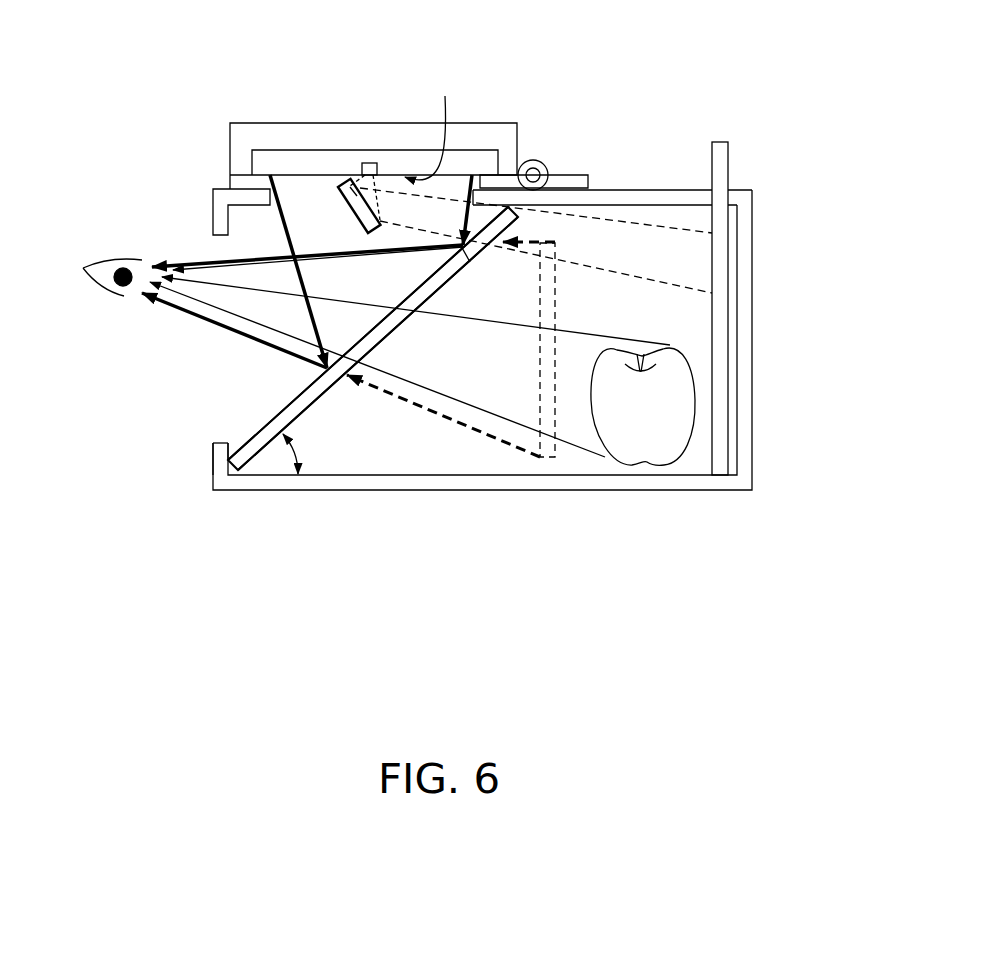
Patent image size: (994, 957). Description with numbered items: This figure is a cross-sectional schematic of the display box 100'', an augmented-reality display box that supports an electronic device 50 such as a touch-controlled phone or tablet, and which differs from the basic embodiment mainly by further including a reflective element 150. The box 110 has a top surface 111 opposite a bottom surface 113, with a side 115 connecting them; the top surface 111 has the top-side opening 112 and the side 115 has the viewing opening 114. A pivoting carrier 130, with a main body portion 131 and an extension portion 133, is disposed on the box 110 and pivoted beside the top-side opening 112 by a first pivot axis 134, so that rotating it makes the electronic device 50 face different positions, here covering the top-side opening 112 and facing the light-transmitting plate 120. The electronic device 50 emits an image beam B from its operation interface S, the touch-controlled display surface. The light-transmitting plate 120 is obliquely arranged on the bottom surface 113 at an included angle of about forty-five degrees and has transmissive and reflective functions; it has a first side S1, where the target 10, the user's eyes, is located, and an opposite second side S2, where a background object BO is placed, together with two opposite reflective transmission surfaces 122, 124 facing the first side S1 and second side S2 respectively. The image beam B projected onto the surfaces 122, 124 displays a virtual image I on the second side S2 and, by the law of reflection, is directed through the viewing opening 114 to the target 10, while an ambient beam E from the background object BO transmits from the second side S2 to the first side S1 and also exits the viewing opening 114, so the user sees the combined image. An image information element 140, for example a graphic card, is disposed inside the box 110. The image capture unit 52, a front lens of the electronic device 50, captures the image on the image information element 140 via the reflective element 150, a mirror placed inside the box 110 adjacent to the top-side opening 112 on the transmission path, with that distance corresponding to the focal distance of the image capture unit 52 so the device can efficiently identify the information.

The display box 100'' is at (471, 331).
The box 110 is at (423, 327).
The top surface 111 is at (693, 198).
The bottom surface 113 is at (567, 480).
The viewing opening 114 is at (192, 377).
The side 115 is at (223, 217).
The light-transmitting plate 120 is at (262, 447).
The reflective transmission surface 122 is at (260, 430).
The reflective transmission surface 124 is at (323, 398).
The pivoting carrier 130 is at (407, 143).
The main body portion 131 is at (243, 130).
The extension portion 133 is at (573, 183).
The first pivot axis 134 is at (534, 160).
The image information element 140 is at (720, 172).
The reflective element 150 is at (347, 185).
The electronic device 50 is at (258, 162).
The image capture unit 52 is at (369, 163).
The target 10 is at (104, 266).
The top-side opening 112 is at (323, 197).
The image beam B is at (172, 266).
The ambient beam E is at (199, 283).
The operation interface S is at (428, 123).
The first side S1 is at (257, 407).
The second side S2 is at (430, 437).
The image I is at (556, 290).
The background object BO is at (670, 373).